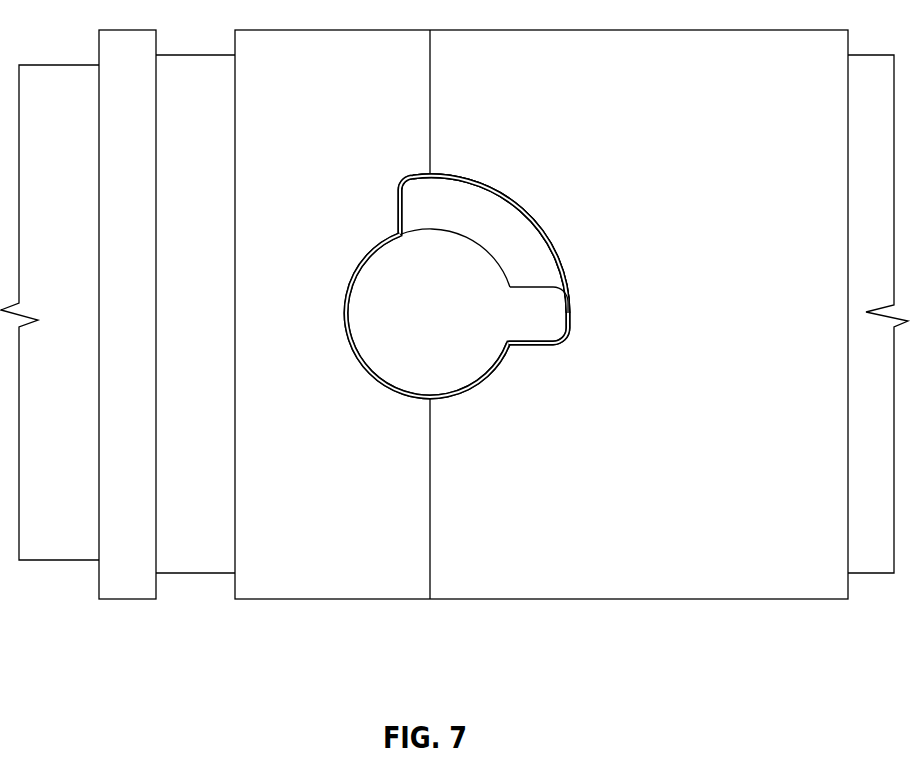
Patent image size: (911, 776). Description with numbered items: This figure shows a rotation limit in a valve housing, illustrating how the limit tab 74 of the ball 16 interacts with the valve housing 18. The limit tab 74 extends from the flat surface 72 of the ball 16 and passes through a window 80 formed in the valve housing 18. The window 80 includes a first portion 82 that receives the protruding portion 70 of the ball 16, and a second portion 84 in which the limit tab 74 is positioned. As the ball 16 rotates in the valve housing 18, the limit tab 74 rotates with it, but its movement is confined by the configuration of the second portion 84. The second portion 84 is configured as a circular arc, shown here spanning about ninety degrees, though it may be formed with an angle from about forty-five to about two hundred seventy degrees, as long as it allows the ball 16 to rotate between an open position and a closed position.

The ball 16 is at (524, 258).
The valve housing 18 is at (743, 585).
The protruding portion 70 is at (450, 365).
The flat surface 72 is at (423, 200).
The limit tab 74 is at (557, 320).
The window 80 is at (494, 205).
The first portion 82 is at (522, 208).
The second portion 84 is at (375, 256).